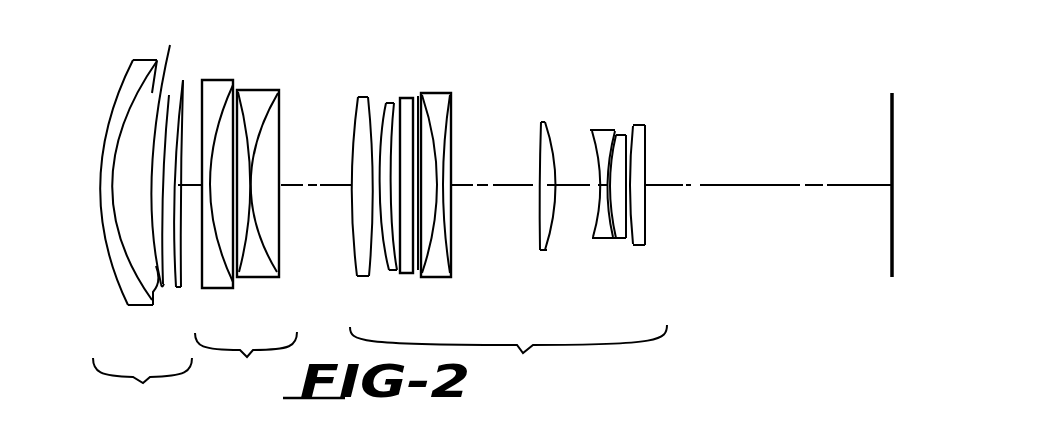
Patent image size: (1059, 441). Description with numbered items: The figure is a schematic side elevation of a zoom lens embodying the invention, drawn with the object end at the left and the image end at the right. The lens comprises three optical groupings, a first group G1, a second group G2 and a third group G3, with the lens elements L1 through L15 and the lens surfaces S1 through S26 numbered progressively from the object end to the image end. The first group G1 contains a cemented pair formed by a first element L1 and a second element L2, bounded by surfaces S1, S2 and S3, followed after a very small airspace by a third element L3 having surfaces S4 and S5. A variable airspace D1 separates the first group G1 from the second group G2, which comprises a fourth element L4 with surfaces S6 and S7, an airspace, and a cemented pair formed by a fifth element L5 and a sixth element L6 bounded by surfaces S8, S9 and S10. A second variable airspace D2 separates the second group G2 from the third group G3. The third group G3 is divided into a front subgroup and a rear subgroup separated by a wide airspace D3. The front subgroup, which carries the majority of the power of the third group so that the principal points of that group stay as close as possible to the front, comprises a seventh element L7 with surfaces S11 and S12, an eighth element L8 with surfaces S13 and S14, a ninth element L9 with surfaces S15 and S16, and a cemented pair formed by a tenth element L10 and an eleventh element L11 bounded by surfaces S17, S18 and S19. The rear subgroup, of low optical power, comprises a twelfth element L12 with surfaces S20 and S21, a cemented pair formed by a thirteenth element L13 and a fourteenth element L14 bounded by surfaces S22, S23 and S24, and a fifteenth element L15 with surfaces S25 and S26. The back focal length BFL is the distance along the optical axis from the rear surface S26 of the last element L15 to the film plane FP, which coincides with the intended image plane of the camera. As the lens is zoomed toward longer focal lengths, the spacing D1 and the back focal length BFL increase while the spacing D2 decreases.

The first lens element L1 is at (108, 176).
The second lens element L2 is at (145, 183).
The third lens element L3 is at (207, 182).
The fourth lens element L4 is at (226, 178).
The fifth lens element L5 is at (265, 188).
The sixth lens element L6 is at (302, 182).
The seventh lens element L7 is at (334, 166).
The eighth lens element L8 is at (366, 189).
The ninth lens element L9 is at (444, 173).
The tenth lens element L10 is at (461, 155).
The eleventh lens element L11 is at (481, 168).
The twelfth lens element L12 is at (558, 181).
The thirteenth lens element L13 is at (598, 176).
The fourteenth lens element L14 is at (645, 183).
The fifteenth lens element L15 is at (679, 190).
The lens surface 1 S1 is at (103, 250).
The lens surface 2 S2 is at (135, 277).
The lens surface 3 S3 is at (157, 281).
The lens surface 4 S4 is at (164, 290).
The lens surface 5 S5 is at (177, 217).
The lens surface 6 S6 is at (181, 291).
The lens surface 7 S7 is at (202, 288).
The lens surface 8 S8 is at (247, 275).
The lens surface 9 S9 is at (263, 275).
The lens surface 10 S10 is at (280, 273).
The lens surface 11 S11 is at (352, 207).
The lens surface 12 S12 is at (372, 222).
The lens surface 13 S13 is at (355, 277).
The lens surface 14 S14 is at (376, 235).
The lens surface 15 S15 is at (387, 217).
The lens surface 16 S16 is at (422, 250).
The lens surface 17 S17 is at (422, 230).
The lens surface 18 S18 is at (436, 220).
The lens surface 19 S19 is at (446, 205).
The lens surface 20 S20 is at (539, 232).
The lens surface 21 S21 is at (552, 203).
The lens surface 22 S22 is at (592, 223).
The lens surface 23 S23 is at (616, 228).
The lens surface 24 S24 is at (627, 225).
The lens surface 25 S25 is at (634, 232).
The lens surface 26 S26 is at (646, 216).
The first variable air space D1 is at (190, 172).
The second variable air space D2 is at (316, 171).
The third variable air space D3 is at (492, 172).
The back focal length BFL is at (768, 171).
The focal plane FP is at (891, 122).
The first lens group G1 is at (142, 387).
The second lens group G2 is at (246, 364).
The third lens group G3 is at (508, 361).